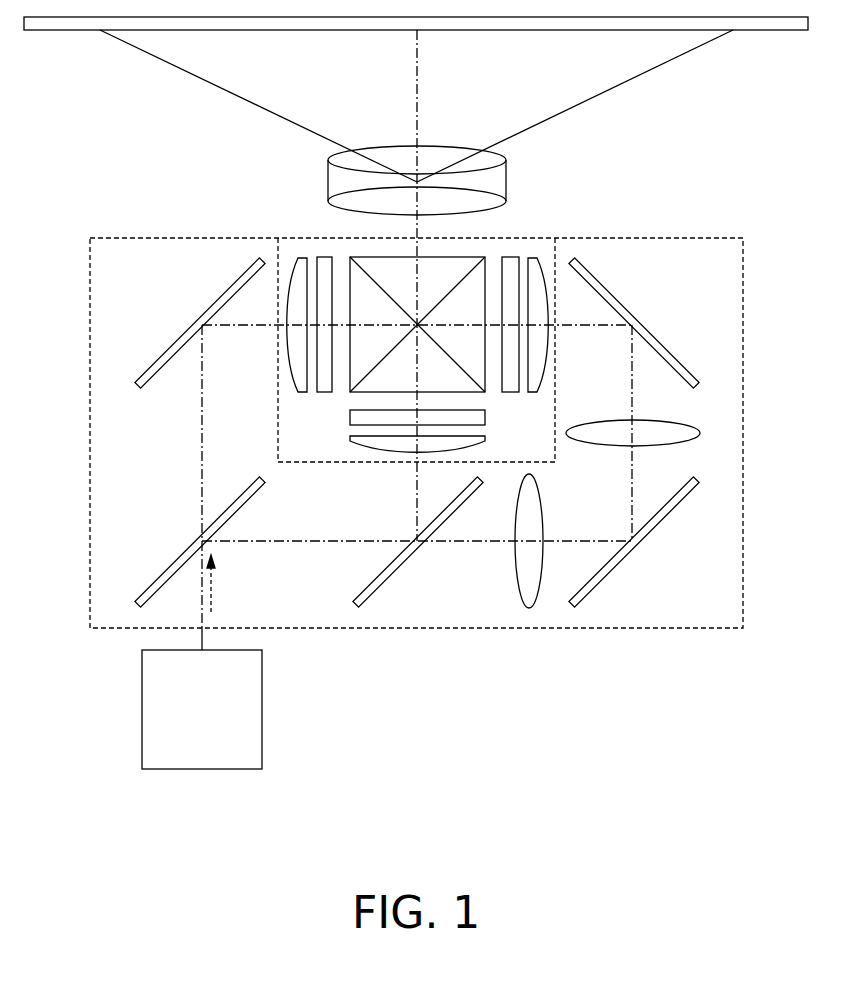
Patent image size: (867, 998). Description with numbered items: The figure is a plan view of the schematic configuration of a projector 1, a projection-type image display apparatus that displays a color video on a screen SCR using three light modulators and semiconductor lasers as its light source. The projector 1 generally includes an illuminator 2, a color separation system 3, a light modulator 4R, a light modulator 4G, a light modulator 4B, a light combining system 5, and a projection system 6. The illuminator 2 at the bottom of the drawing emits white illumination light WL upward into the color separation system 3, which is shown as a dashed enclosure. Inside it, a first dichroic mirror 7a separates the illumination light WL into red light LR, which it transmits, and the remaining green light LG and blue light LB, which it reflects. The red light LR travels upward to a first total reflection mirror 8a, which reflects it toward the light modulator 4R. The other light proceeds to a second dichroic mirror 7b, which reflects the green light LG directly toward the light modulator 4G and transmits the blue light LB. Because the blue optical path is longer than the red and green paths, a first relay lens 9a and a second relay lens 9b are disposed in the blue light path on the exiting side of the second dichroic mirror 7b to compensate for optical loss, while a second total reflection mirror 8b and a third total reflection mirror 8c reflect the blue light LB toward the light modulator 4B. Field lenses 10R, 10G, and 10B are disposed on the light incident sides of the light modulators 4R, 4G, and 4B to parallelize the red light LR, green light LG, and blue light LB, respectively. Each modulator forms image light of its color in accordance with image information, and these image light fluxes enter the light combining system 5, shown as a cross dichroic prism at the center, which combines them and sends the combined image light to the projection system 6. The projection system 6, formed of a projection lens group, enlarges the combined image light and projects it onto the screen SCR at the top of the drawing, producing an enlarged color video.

The screen SCR is at (750, 33).
The projector 1 is at (736, 226).
The illuminator 2 is at (263, 705).
The color separation system 3 is at (89, 378).
The light modulator 4R is at (323, 257).
The light modulator 4G is at (352, 420).
The light modulator 4B is at (510, 257).
The light combining system 5 is at (440, 265).
The projection system 6 is at (398, 157).
The first dichroic mirror 7a is at (165, 572).
The second dichroic mirror 7b is at (397, 575).
The first total reflection mirror 8a is at (176, 340).
The second total reflection mirror 8b is at (655, 527).
The third total reflection mirror 8c is at (660, 340).
The first relay lens 9a is at (515, 560).
The second relay lens 9b is at (690, 430).
The field lens 10R is at (298, 257).
The field lens 10G is at (358, 440).
The field lens 10B is at (537, 257).
The red light LR is at (202, 455).
The green light LG is at (417, 497).
The blue light LB is at (632, 490).
The illumination light WL is at (215, 594).